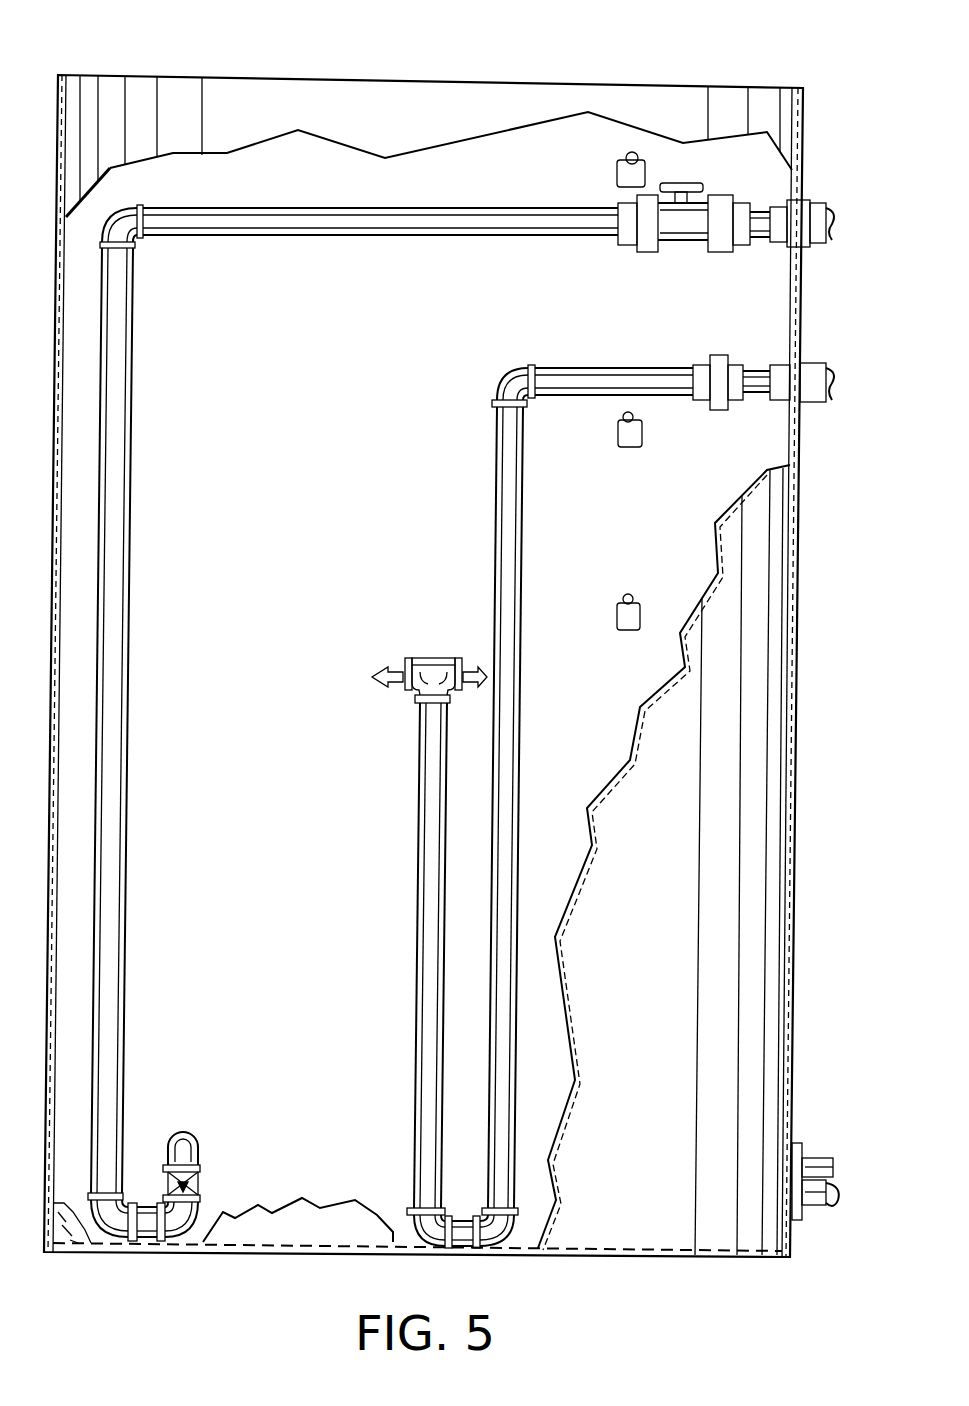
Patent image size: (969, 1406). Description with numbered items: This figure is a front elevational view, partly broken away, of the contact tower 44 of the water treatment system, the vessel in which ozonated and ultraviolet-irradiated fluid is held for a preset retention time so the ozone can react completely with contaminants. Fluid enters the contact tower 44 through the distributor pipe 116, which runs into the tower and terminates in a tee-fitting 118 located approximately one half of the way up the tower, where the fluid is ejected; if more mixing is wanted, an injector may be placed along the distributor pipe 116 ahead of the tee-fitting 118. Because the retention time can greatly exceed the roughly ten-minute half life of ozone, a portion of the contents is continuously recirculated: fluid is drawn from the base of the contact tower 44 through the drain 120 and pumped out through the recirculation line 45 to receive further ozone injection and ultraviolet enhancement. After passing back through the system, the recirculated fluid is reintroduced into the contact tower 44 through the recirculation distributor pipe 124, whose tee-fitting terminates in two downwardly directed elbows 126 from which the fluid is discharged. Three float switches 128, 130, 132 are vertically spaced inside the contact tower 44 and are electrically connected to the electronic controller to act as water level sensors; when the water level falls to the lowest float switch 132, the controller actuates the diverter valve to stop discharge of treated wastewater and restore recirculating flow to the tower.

The contact tower 44 is at (212, 68).
The recirculation line 45 is at (813, 1207).
The distributor pipe 116 is at (522, 752).
The tee-fitting 118 is at (437, 658).
The drain 120 is at (813, 1158).
The recirculation distributor pipe 124 is at (125, 785).
The downwardly directed elbows 126 is at (168, 1147).
The float switch 128 is at (617, 166).
The float switch 130 is at (617, 428).
The lowest float switch 132 is at (617, 605).